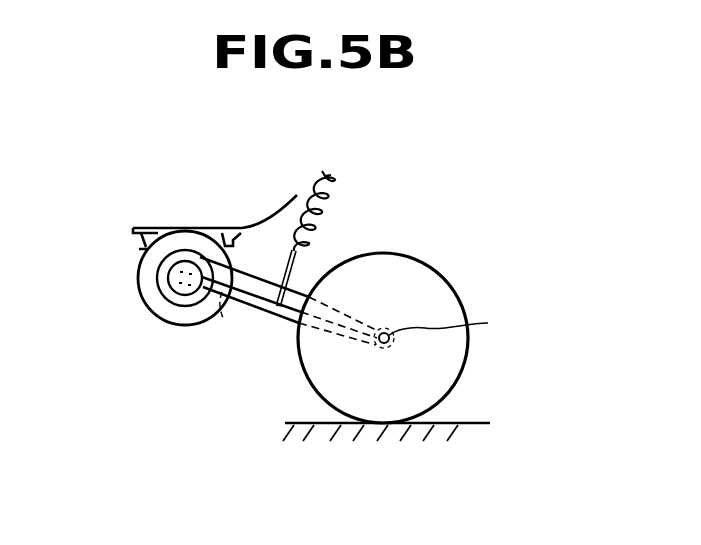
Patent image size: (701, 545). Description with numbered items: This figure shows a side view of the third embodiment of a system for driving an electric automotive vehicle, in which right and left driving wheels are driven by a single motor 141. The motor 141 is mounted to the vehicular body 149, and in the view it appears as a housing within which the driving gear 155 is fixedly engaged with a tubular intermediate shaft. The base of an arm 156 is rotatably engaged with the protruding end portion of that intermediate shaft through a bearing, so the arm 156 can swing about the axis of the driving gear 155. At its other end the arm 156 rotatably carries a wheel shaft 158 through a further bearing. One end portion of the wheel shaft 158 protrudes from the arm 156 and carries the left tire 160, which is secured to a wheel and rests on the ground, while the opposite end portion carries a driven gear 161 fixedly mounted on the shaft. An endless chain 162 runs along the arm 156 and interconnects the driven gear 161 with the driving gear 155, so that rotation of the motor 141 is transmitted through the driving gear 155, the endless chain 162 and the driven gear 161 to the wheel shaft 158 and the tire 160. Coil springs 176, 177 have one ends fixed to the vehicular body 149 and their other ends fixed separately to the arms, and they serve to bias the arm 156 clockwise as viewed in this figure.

The motor 141 is at (143, 286).
The vehicular body 149 is at (267, 222).
The driving gear 155 is at (172, 289).
The arm 156 is at (243, 295).
The wheel shaft 158 is at (388, 342).
The left tire 160 is at (413, 285).
The driven gear 161 is at (488, 323).
The endless chain 162 is at (260, 320).
The coil spring 176 is at (398, 238).
The coil spring 177 is at (335, 193).